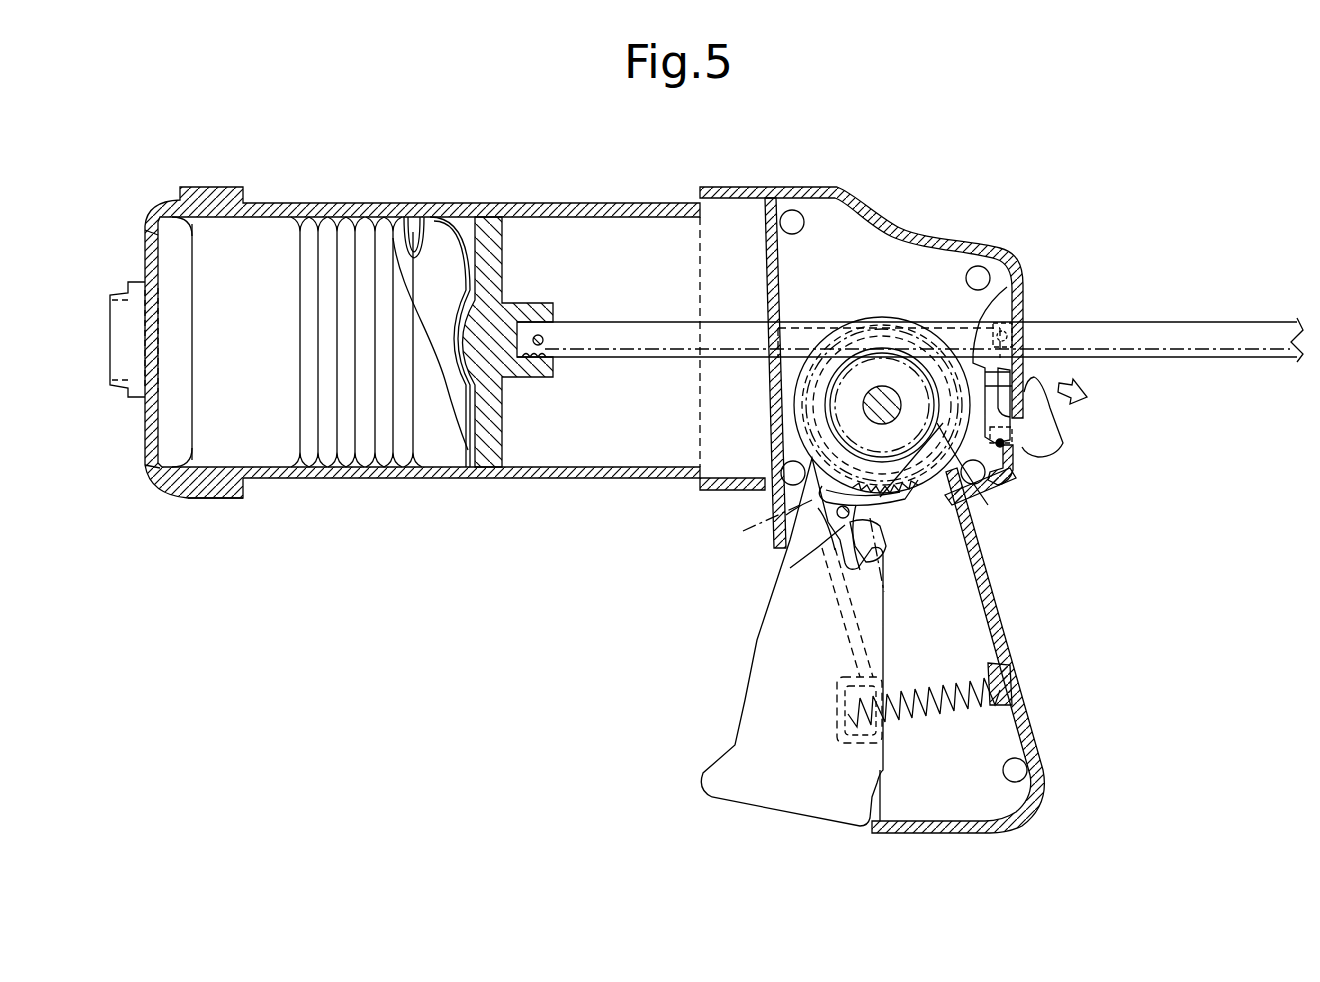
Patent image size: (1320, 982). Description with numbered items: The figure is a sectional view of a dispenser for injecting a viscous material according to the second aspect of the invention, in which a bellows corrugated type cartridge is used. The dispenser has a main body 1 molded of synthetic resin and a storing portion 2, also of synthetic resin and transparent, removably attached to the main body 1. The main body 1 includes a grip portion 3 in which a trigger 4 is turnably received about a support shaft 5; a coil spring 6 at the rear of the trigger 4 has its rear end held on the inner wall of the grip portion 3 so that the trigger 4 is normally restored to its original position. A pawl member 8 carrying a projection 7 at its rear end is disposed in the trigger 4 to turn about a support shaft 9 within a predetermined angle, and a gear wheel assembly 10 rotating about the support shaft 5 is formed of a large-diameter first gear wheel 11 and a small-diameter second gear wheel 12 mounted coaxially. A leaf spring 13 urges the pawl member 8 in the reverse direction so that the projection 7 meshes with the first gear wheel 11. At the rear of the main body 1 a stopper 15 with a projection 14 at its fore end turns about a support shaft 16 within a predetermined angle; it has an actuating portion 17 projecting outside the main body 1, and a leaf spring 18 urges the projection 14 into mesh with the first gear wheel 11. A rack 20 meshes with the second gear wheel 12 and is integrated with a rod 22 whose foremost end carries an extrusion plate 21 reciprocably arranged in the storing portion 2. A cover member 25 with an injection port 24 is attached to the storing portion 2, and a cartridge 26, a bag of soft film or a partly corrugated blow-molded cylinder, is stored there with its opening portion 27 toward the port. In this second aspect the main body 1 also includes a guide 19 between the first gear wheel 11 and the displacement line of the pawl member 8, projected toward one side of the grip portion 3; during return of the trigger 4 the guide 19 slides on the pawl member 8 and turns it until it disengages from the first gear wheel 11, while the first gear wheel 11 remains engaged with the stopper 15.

The main body 1 is at (950, 192).
The storing portion 2 is at (372, 206).
The grip portion 3 is at (1047, 752).
The trigger 4 is at (750, 693).
The support shaft 5 is at (874, 390).
The coil spring 6 is at (935, 715).
The projection 7 is at (897, 507).
The pawl member 8 is at (790, 568).
The support shaft 9 is at (833, 550).
The gear wheel assembly 10 is at (875, 310).
The first gear wheel 11 is at (955, 492).
The second gear wheel 12 is at (997, 492).
The leaf spring 13 is at (893, 551).
The projection 14 is at (1008, 290).
The stopper 15 is at (1033, 407).
The support shaft 16 is at (1023, 468).
The actuating portion 17 is at (1040, 373).
The leaf spring 18 is at (1015, 318).
The guide 19 is at (776, 518).
The rack 20 is at (1208, 357).
The extrusion plate 21 is at (503, 216).
The rod 22 is at (1175, 327).
The injection port 24 is at (152, 424).
The cover member 25 is at (218, 496).
The cartridge 26 is at (437, 452).
The opening portion 27 is at (122, 292).